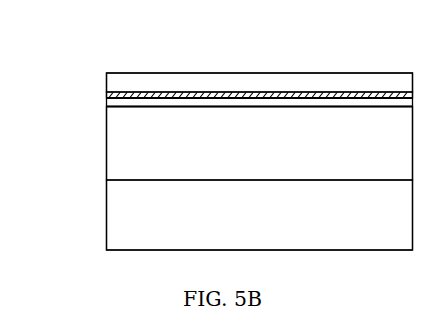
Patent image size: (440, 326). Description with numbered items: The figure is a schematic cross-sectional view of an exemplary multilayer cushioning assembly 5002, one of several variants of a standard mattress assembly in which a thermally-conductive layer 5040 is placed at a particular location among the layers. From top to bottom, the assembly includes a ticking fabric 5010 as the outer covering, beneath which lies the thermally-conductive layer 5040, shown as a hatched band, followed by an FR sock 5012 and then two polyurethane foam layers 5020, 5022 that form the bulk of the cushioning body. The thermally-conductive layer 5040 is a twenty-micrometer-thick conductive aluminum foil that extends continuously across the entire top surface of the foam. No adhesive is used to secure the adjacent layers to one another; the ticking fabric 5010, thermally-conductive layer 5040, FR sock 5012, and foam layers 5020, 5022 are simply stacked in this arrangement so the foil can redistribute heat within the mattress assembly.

The layered structure 5002 is at (265, 63).
The ticking fabric 5010 is at (125, 78).
The thermally-conductive layer 5040 is at (122, 94).
The FR sock 5012 is at (118, 101).
The polyurethane foam layer 5020 is at (130, 145).
The polyurethane foam layer 5022 is at (137, 215).